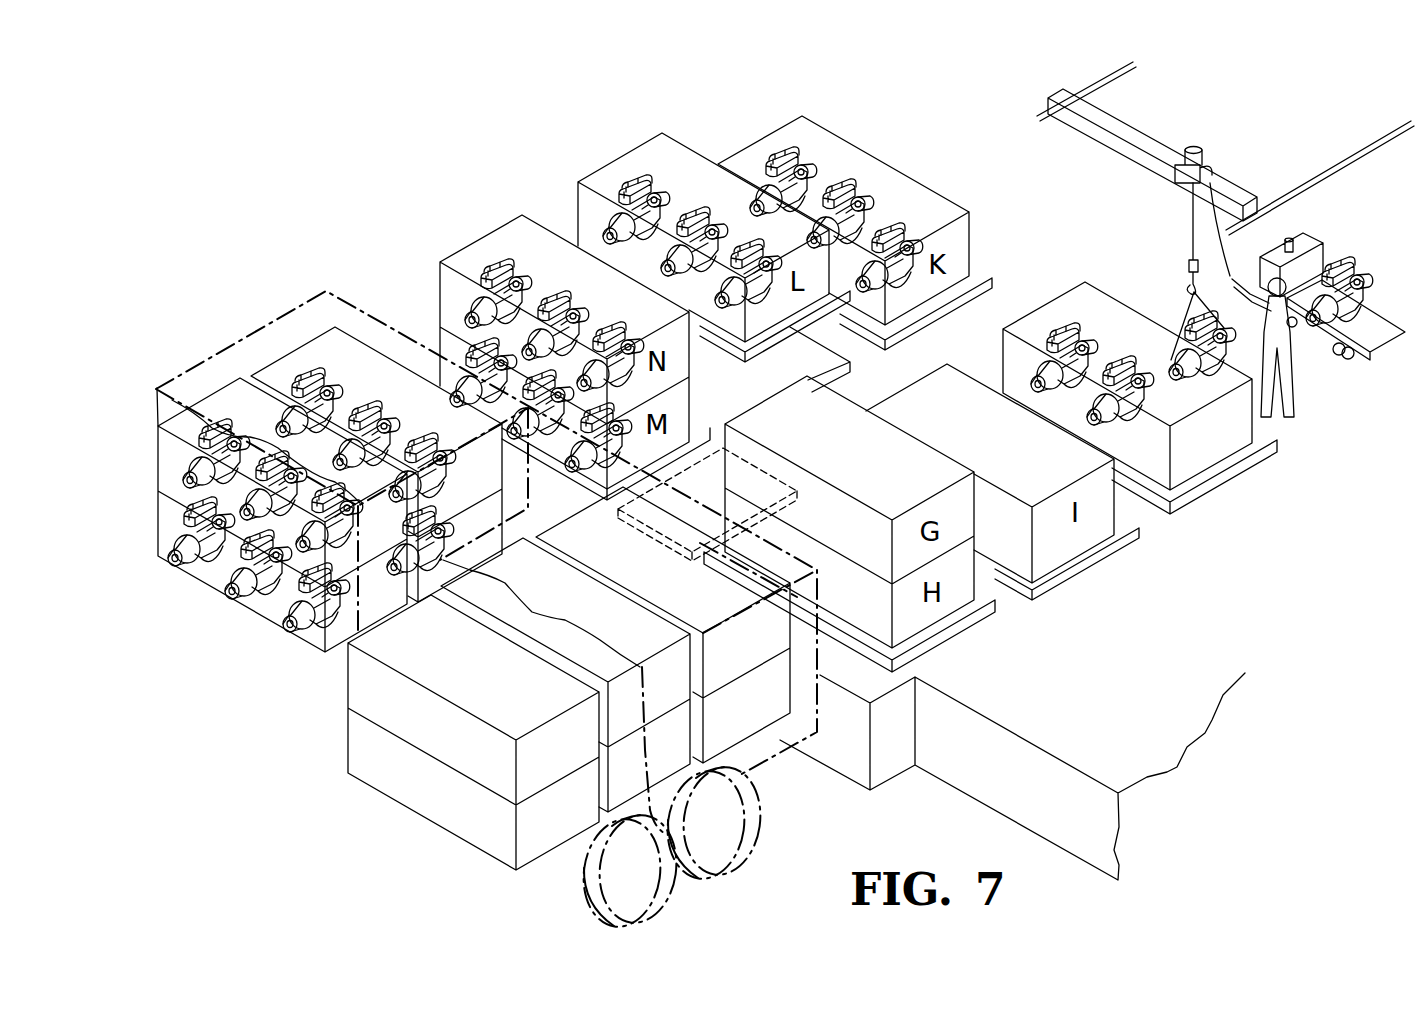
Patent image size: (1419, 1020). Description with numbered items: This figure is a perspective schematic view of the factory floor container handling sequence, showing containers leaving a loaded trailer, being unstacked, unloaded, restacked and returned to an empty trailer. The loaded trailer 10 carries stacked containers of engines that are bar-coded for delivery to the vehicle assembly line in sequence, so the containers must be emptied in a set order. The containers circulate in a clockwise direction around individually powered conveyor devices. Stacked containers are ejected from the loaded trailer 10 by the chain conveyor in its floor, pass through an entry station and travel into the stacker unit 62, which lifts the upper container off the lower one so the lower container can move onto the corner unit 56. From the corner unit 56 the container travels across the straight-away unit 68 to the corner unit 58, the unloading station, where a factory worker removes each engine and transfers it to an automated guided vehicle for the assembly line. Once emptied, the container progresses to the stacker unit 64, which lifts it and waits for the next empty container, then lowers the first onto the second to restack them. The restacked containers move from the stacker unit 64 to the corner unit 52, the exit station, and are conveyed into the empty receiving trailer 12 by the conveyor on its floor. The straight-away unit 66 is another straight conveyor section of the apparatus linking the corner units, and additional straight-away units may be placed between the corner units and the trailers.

The loaded trailer 10 is at (244, 346).
The empty receiving trailer 12 is at (790, 760).
The corner unit 52 is at (969, 627).
The corner unit 56 is at (979, 272).
The corner unit 58 is at (1238, 477).
The stacker unit 62 is at (827, 366).
The stacker unit 64 is at (701, 440).
The straight-away unit 66 is at (715, 467).
The straight-away unit 68 is at (1029, 303).